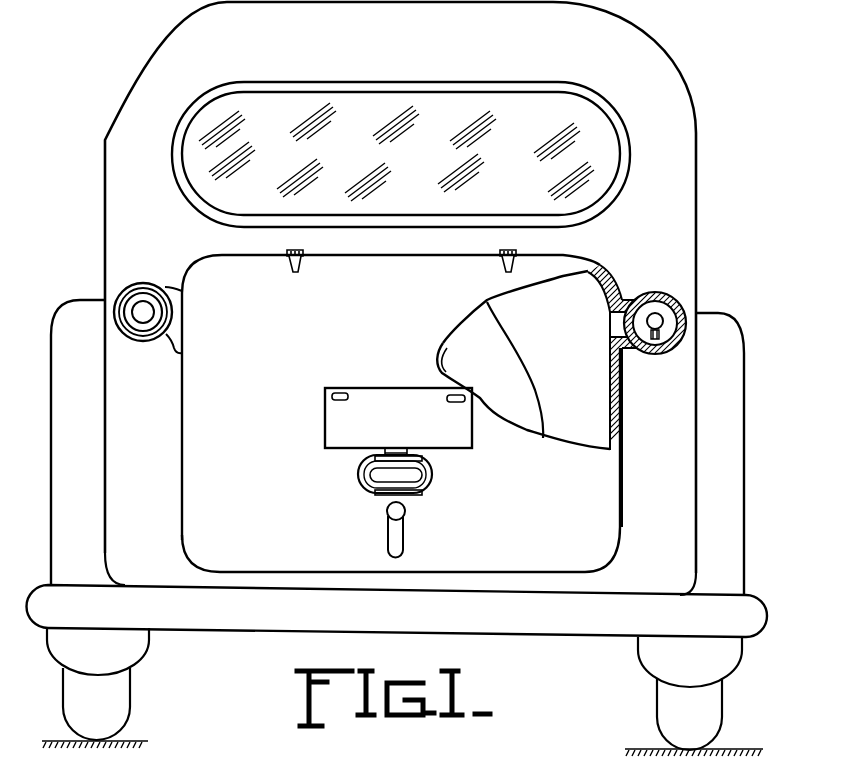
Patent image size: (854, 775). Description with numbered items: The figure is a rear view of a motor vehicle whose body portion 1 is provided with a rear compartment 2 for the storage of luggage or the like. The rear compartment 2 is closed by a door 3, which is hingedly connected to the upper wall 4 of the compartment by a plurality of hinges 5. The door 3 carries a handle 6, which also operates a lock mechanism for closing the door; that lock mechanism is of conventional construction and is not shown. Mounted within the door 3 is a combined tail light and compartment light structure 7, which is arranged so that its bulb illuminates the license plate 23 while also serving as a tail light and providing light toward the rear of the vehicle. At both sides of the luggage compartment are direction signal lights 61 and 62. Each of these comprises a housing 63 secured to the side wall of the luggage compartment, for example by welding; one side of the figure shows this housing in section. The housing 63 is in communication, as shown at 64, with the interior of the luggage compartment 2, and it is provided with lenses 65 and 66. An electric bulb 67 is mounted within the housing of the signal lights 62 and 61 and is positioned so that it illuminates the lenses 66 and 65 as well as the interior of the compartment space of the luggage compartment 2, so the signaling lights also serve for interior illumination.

The body portion 1 is at (687, 218).
The rear compartment 2 is at (620, 408).
The door 3 is at (608, 488).
The upper wall 4 is at (593, 275).
The hinges 5 is at (500, 267).
The handle 6 is at (398, 537).
The combined tail light and compartment light structure 7 is at (432, 470).
The license plate 23 is at (375, 397).
The direction signal light 61 is at (677, 298).
The direction signal light 62 is at (138, 303).
The housing 63 is at (663, 290).
The communication opening 64 is at (628, 323).
The lens 65 is at (158, 317).
The lens 66 is at (683, 322).
The electric bulb 67 is at (672, 355).